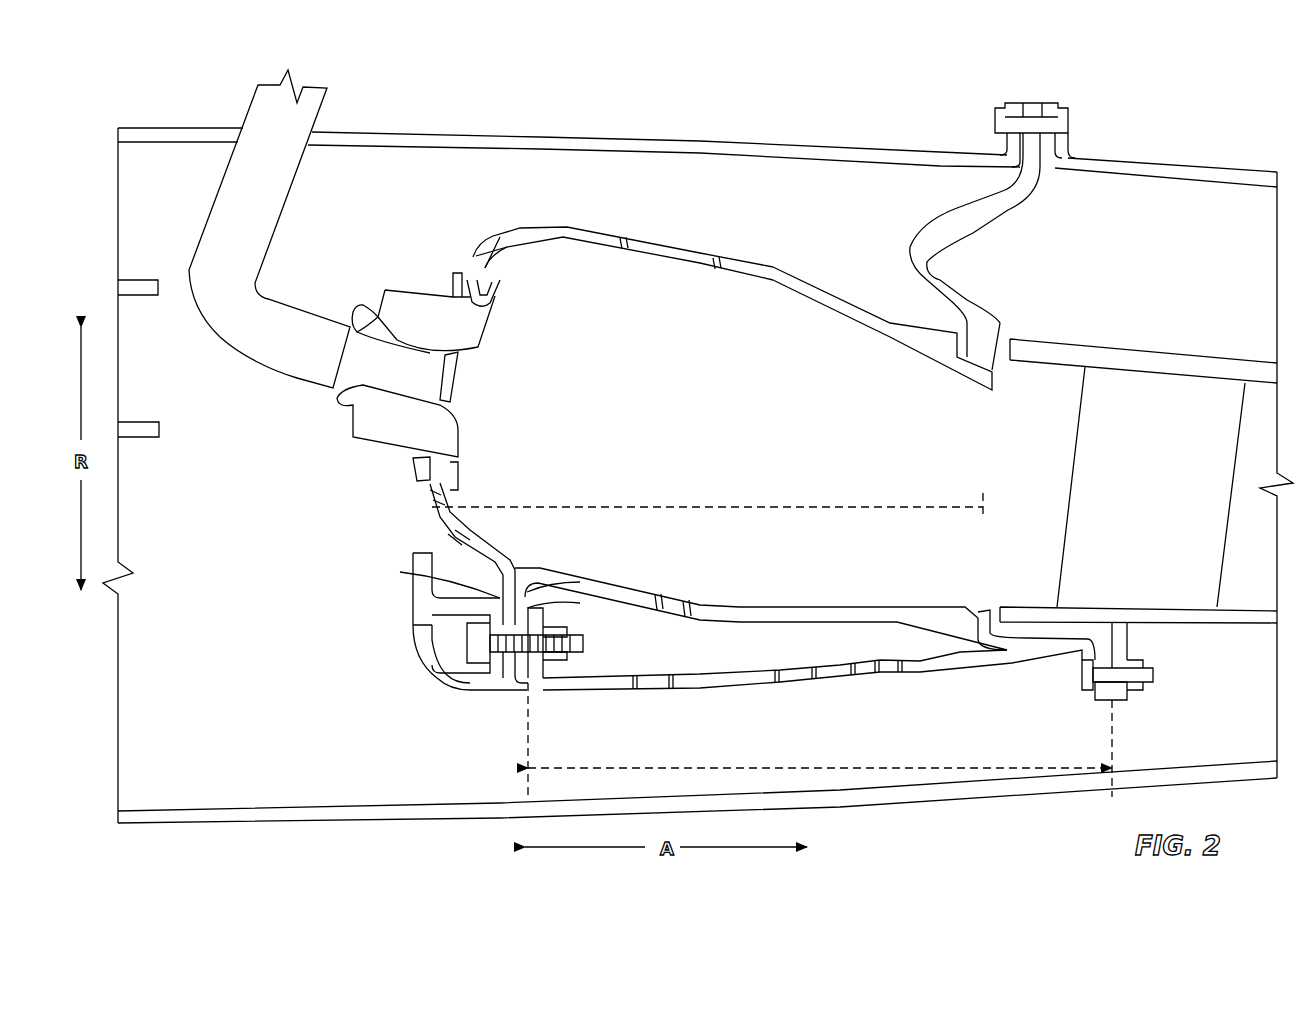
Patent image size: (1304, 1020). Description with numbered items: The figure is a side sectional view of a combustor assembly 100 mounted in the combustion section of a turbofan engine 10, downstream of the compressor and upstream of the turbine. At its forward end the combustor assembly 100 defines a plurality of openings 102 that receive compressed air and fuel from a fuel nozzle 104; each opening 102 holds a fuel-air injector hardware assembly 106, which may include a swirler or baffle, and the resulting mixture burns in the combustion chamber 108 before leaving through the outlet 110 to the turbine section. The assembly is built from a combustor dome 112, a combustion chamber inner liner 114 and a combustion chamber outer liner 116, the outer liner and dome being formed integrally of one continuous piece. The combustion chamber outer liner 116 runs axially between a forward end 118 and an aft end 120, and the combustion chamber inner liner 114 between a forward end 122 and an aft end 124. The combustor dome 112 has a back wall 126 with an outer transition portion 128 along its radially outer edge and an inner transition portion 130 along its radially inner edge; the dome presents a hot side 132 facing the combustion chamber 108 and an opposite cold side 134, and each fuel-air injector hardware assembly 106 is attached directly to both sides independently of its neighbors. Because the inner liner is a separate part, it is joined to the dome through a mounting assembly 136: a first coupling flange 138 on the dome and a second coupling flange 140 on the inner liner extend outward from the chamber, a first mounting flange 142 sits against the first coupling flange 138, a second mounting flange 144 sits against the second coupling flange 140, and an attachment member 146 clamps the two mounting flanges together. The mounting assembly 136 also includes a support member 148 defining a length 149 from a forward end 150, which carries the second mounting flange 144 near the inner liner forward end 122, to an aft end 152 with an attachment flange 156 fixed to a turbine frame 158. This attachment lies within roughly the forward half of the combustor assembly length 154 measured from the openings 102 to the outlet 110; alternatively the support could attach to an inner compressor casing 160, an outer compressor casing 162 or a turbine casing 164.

The turbofan engine 10 is at (668, 85).
The combustor assembly 100 is at (823, 192).
The opening 102 is at (440, 368).
The fuel nozzle 104 is at (205, 218).
The fuel-air injector hardware assembly 106 is at (423, 287).
The combustion chamber 108 is at (715, 439).
The outlet 110 is at (969, 463).
The combustor dome 112 is at (430, 478).
The combustion chamber inner liner 114 is at (756, 605).
The combustion chamber outer liner 116 is at (740, 262).
The forward end 118 is at (586, 223).
The aft end 120 is at (988, 352).
The forward end 122 is at (541, 567).
The aft end 124 is at (965, 594).
The back wall 126 is at (458, 398).
The outer transition portion 128 is at (558, 258).
The inner transition portion 130 is at (489, 531).
The hot side 132 is at (506, 267).
The cold side 134 is at (462, 252).
The mounting assembly 136 is at (694, 713).
The first coupling flange 138 is at (413, 573).
The second coupling flange 140 is at (528, 603).
The first mounting flange 142 is at (495, 666).
The second mounting flange 144 is at (534, 663).
The attachment member 146 is at (598, 643).
The support member 148 is at (750, 691).
The length 149 is at (614, 767).
The forward end 150 is at (542, 709).
The aft end 152 is at (1083, 713).
The combustor assembly length 154 is at (784, 506).
The attachment flange 156 is at (1082, 688).
The turbine frame 158 is at (1177, 623).
The inner compressor casing 160 is at (885, 794).
The outer compressor casing 162 is at (737, 136).
The turbine casing 164 is at (1133, 157).